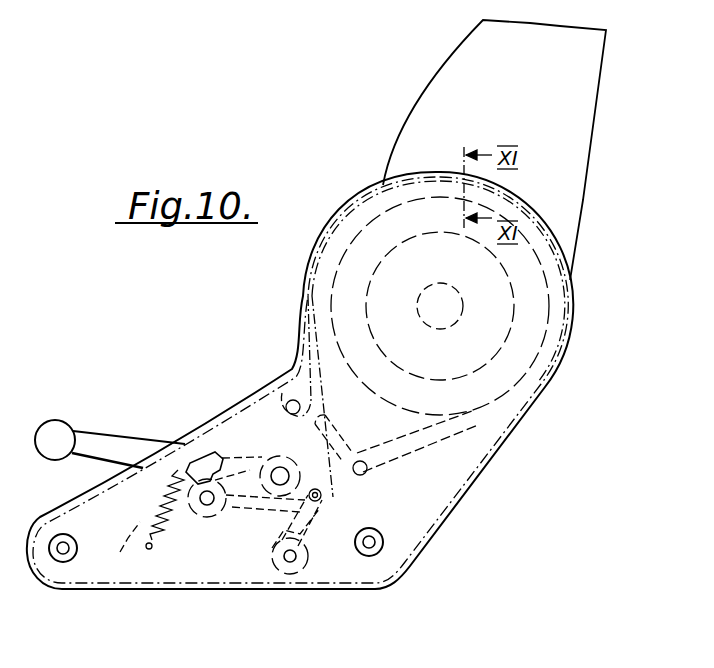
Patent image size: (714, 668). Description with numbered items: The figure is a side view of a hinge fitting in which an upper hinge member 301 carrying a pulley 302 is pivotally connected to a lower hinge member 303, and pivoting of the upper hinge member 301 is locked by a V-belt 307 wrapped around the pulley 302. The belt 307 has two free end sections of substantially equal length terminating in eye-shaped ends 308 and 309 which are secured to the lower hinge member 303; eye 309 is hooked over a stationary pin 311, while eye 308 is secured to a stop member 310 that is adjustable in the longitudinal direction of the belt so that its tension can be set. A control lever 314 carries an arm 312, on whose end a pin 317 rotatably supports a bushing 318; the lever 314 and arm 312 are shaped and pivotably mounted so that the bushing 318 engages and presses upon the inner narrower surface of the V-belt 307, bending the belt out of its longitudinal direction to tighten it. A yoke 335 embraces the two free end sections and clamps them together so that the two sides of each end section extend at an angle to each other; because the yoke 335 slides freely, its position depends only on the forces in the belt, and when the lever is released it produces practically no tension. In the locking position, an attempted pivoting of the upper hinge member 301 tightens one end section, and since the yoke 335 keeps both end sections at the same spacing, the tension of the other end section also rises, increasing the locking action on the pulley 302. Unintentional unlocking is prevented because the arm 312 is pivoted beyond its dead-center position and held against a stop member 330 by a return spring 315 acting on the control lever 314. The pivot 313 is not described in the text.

The upper hinge member 301 is at (468, 82).
The pulley 302 is at (537, 327).
The lower hinge member 303 is at (420, 537).
The V-belt 307 is at (407, 440).
The eye-shaped end 308 is at (212, 514).
The eye-shaped end 309 is at (278, 562).
The stop member 310 is at (212, 458).
The stationary pin 311 is at (292, 575).
The arm 312 is at (260, 500).
The pivot pin 313 is at (274, 455).
The control lever 314 is at (98, 437).
The return spring 315 is at (86, 549).
The pin 317 is at (323, 496).
The bushing 318 is at (326, 505).
The stop member 330 is at (326, 456).
The yoke 335 is at (291, 400).